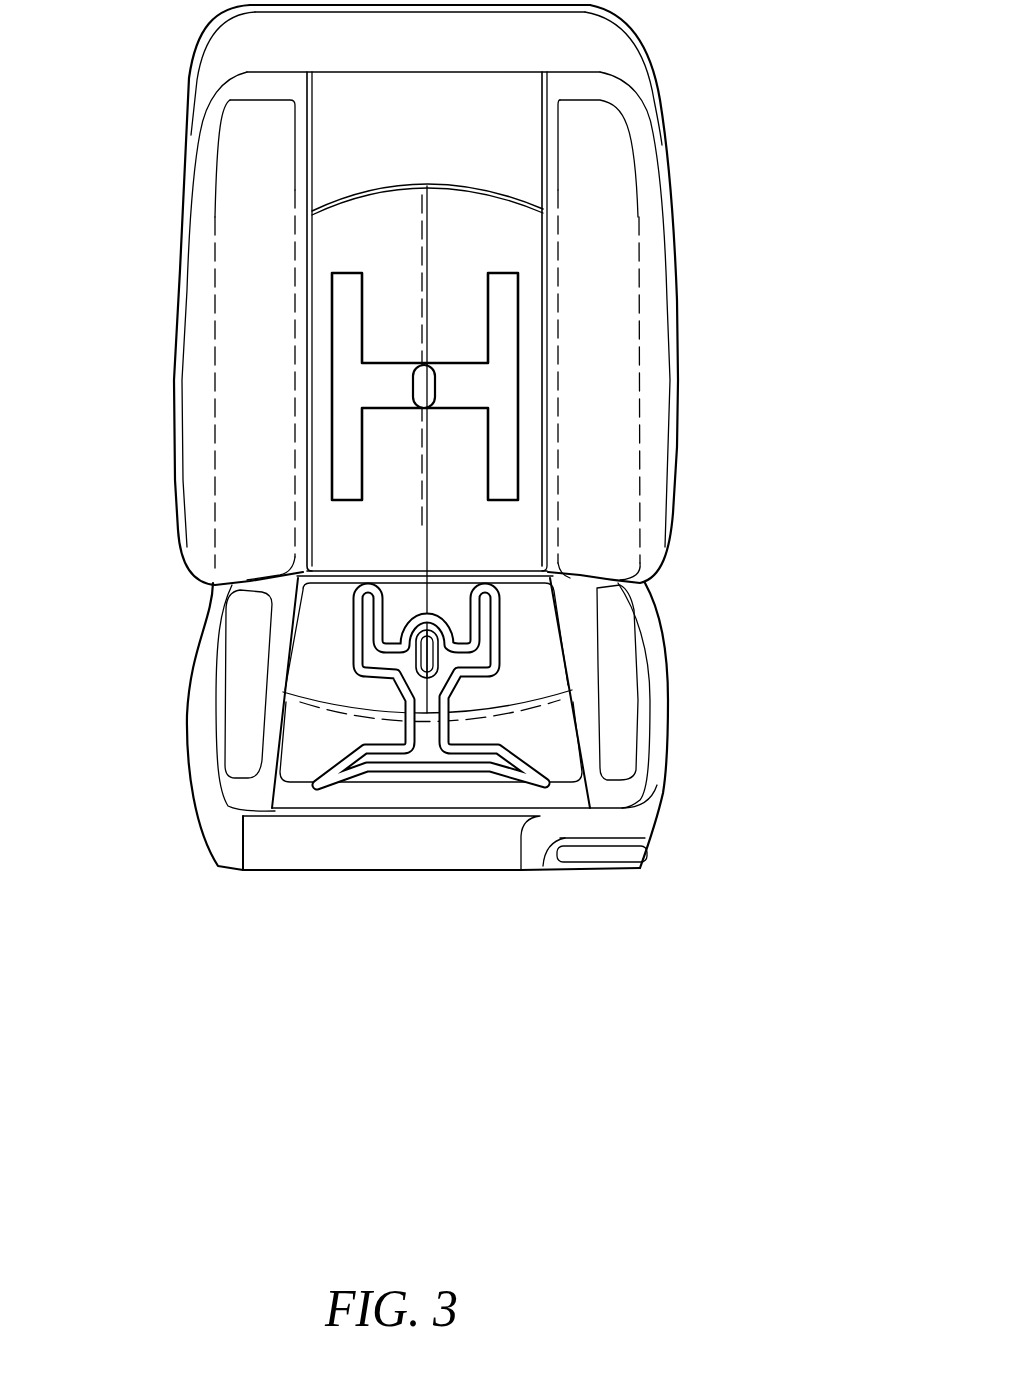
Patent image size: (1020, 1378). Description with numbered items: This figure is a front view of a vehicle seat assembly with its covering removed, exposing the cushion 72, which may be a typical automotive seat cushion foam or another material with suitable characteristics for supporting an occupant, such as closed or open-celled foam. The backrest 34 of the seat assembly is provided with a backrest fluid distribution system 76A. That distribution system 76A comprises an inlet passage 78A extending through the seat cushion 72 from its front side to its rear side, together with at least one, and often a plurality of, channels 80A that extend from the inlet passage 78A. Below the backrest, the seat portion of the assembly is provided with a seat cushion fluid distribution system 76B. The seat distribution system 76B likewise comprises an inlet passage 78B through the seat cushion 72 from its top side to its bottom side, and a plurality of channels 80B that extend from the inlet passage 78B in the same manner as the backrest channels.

The backrest 34 is at (437, 437).
The cushion 72 is at (416, 359).
The backrest fluid distribution system 76A is at (414, 334).
The inlet passage 78A is at (440, 380).
The channels 80A is at (522, 452).
The seat cushion fluid distribution system 76B is at (557, 680).
The inlet passage 78B is at (438, 664).
The channels 80B is at (520, 762).